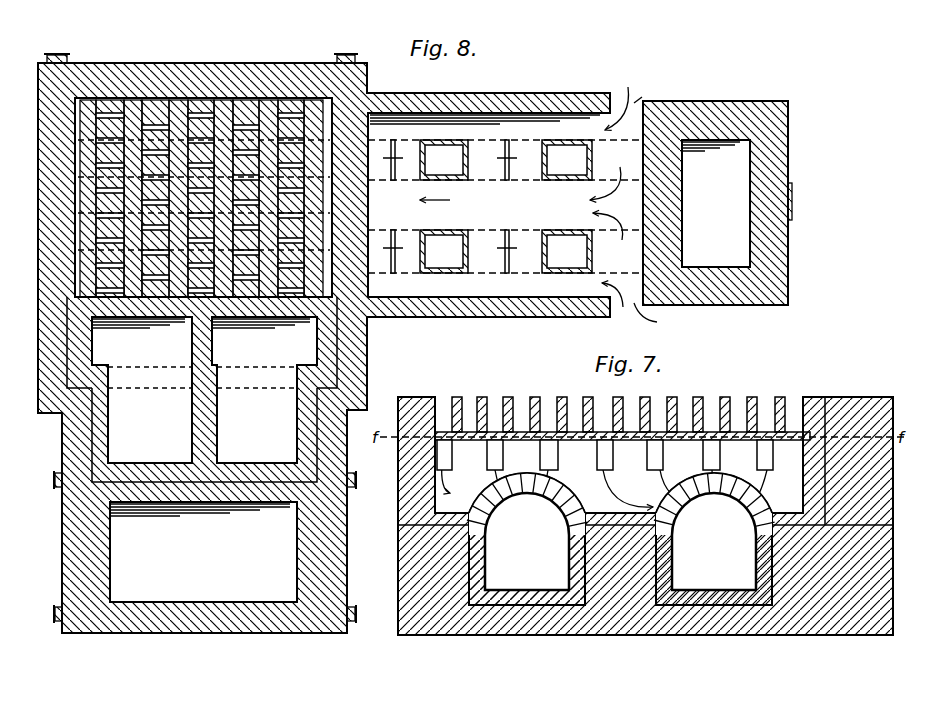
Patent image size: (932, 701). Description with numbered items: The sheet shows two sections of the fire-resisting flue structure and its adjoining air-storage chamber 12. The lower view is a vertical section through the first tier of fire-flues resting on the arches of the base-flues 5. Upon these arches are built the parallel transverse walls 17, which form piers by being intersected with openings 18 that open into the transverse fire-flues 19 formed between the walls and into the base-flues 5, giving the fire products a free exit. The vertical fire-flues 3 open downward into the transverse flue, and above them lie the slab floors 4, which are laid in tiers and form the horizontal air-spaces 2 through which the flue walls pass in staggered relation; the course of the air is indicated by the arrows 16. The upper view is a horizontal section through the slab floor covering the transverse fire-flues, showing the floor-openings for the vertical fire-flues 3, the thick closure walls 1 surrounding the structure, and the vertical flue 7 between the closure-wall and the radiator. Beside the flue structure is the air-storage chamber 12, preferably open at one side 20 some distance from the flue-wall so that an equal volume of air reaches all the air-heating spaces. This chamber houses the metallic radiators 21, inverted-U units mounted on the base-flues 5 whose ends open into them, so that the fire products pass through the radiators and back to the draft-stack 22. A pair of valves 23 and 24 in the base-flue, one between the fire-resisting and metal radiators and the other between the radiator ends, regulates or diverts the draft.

In FIG. 8, the closure walls 1 is at (212, 82).
In FIG. 7, the air-spaces 2 is at (467, 410).
In FIG. 8, the vertical fire-flues 3 is at (108, 113).
In FIG. 7, the vertical fire-flues 3 is at (548, 440).
In FIG. 8, the slab floors 4 is at (197, 125).
In FIG. 7, the slab floors 4 is at (568, 430).
In FIG. 7, the base-flues 5 is at (621, 539).
In FIG. 8, the vertical flue 7 is at (130, 322).
In FIG. 8, the air-storage chamber 12 is at (505, 194).
In FIG. 8, the arrows 16 is at (609, 190).
In FIG. 7, the transverse walls 17 is at (593, 455).
In FIG. 7, the openings 18 is at (632, 455).
In FIG. 7, the transverse fire-flues 19 is at (620, 491).
In FIG. 8, the open side 20 is at (657, 212).
In FIG. 8, the metallic radiators 21 is at (506, 206).
In FIG. 8, the draft-stack 22 is at (717, 203).
In FIG. 8, the valve 23 is at (393, 142).
In FIG. 8, the valve 24 is at (509, 145).